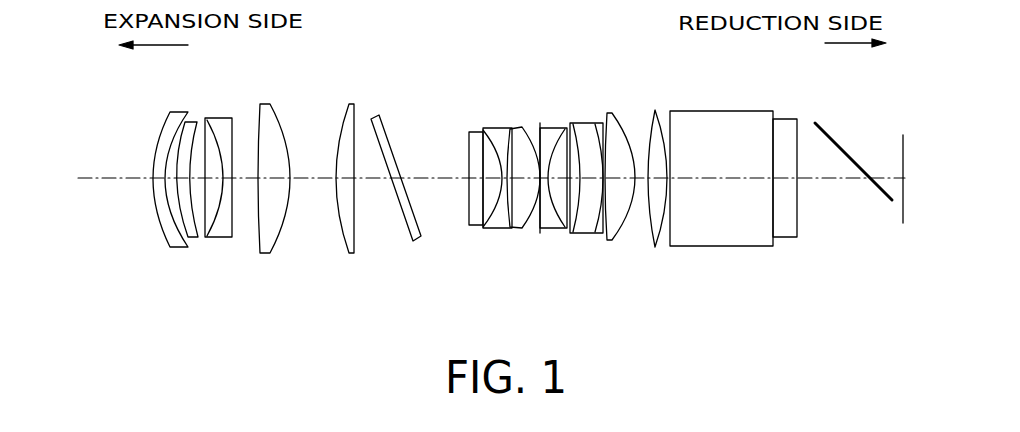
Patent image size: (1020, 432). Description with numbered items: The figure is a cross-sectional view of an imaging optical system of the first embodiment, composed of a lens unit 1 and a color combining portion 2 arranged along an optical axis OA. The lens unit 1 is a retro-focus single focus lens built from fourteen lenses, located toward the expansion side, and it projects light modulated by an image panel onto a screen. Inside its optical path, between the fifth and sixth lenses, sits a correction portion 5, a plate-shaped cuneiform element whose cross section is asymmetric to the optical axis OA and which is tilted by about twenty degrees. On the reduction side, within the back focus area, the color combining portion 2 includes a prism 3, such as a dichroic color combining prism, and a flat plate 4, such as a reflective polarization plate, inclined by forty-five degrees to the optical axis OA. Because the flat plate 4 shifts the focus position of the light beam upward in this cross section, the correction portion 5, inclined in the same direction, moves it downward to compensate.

The lens unit 1 is at (672, 272).
The color combining portion 2 is at (905, 272).
The prism 3 is at (722, 127).
The flat plate 4 is at (826, 128).
The correction portion 5 is at (384, 134).
The optical axis OA is at (112, 179).